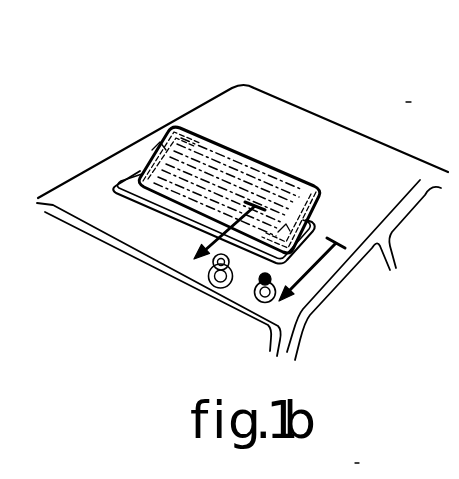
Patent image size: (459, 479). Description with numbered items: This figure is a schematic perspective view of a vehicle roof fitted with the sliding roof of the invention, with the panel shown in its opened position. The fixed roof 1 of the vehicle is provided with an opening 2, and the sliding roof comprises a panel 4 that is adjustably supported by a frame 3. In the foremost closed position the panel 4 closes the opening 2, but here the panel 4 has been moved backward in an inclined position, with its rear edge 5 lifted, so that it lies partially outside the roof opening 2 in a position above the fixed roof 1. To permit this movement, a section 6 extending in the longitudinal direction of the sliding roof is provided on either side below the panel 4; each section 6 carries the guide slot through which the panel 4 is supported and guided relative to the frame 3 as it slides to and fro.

The vehicle roof 1 is at (365, 152).
The roof opening 2 is at (193, 220).
The frame 3 is at (120, 181).
The cover 4 is at (258, 173).
The glass pane 5 is at (295, 173).
The seal 6 is at (163, 148).